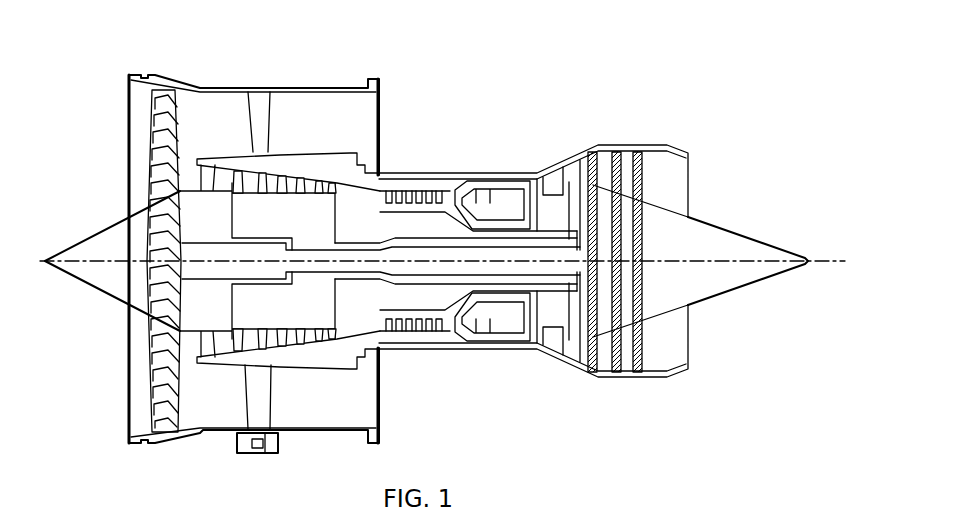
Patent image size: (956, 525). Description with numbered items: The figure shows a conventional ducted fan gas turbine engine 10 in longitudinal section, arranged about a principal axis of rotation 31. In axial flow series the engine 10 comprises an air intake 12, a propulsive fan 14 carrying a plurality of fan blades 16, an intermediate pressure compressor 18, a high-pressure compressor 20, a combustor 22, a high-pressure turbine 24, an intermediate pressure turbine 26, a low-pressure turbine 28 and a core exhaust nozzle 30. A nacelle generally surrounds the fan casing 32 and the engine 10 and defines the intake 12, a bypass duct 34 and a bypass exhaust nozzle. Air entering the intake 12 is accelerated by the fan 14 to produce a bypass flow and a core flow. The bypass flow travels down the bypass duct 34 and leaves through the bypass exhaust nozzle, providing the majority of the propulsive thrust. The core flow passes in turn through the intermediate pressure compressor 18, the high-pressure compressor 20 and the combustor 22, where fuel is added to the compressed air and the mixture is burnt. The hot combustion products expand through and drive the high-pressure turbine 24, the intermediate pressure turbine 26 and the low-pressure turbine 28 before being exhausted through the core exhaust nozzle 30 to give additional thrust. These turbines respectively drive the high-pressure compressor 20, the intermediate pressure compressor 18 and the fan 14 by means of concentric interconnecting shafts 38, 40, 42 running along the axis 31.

The ducted fan gas turbine engine 10 is at (581, 91).
The air intake 12 is at (97, 388).
The propulsive fan 14 is at (160, 424).
The fan blades 16 is at (167, 385).
The intermediate pressure compressor 18 is at (253, 177).
The high-pressure compressor 20 is at (398, 333).
The combustor 22 is at (493, 338).
The high-pressure turbine 24 is at (532, 348).
The intermediate pressure turbine 26 is at (573, 341).
The low-pressure turbine 28 is at (615, 373).
The core exhaust nozzle 30 is at (690, 346).
The principal axis of rotation 31 is at (40, 259).
The fan casing 32 is at (233, 88).
The bypass duct 34 is at (318, 113).
The interconnecting shaft 38 is at (362, 259).
The interconnecting shaft 40 is at (440, 246).
The interconnecting shaft 42 is at (500, 232).